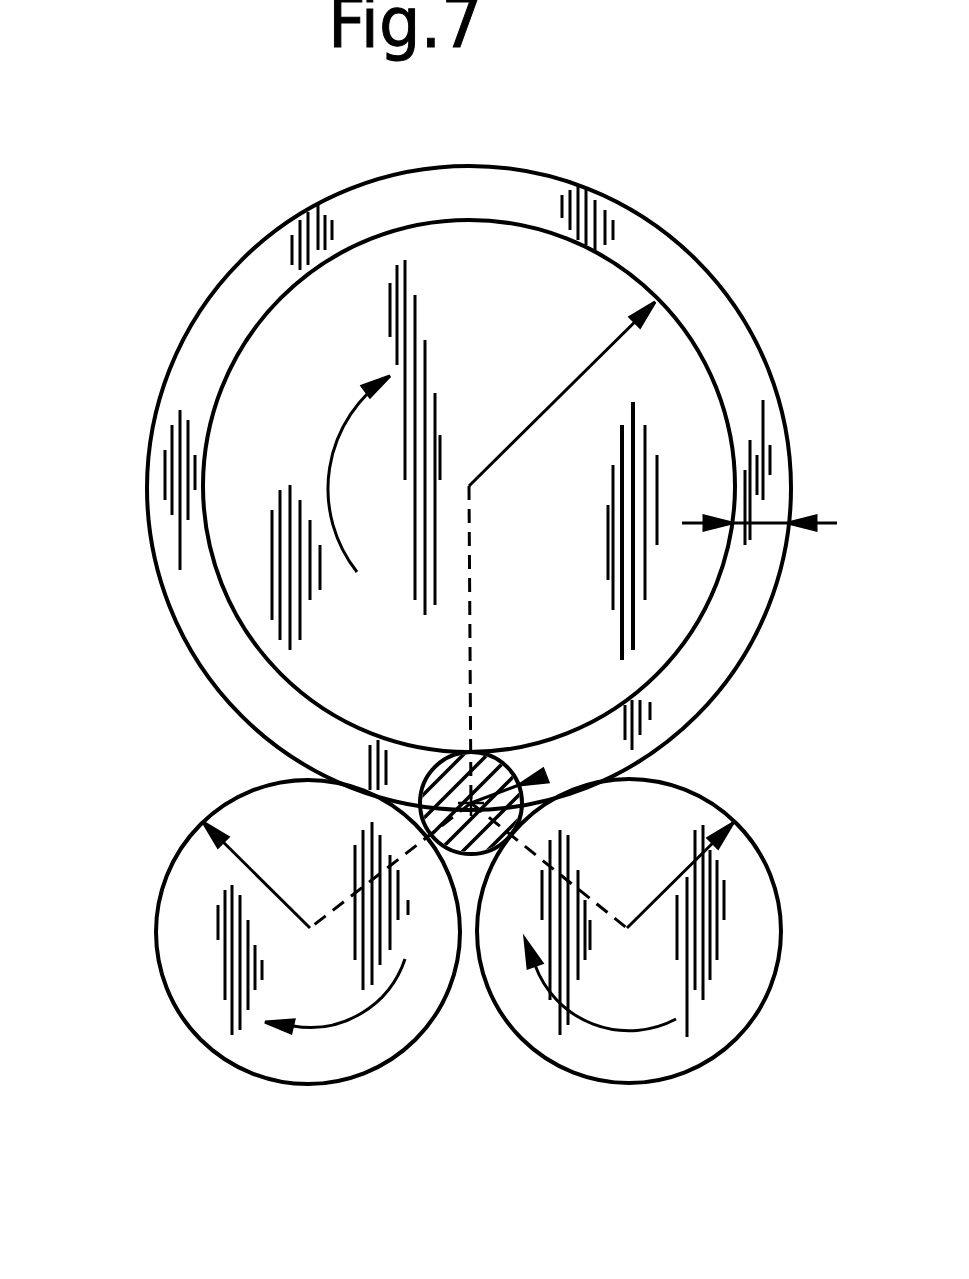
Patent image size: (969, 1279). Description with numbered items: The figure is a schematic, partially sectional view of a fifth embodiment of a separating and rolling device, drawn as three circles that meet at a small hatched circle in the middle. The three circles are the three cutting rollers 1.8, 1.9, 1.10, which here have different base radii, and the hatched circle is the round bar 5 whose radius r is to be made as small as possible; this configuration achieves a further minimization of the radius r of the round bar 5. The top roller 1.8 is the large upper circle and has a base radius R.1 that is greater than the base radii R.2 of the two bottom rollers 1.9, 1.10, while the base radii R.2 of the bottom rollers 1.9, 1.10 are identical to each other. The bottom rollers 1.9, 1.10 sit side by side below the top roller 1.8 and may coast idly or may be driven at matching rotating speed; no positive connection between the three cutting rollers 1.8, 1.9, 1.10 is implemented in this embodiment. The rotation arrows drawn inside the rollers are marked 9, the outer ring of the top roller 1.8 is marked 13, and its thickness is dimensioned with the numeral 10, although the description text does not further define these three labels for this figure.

The top roller 1.8 is at (243, 413).
The bottom roller 1.9 is at (723, 940).
The bottom roller 1.10 is at (212, 935).
The elastic covering layer of roll 13 is at (703, 310).
The thickness of covering layer 10 is at (763, 520).
The round bar 5 is at (463, 753).
The direction of rotation 9 is at (337, 545).
The base radius of the top roller R.1 is at (562, 394).
The base radii of the bottom rollers R.2 is at (468, 875).
The radius of the round bar r is at (667, 710).